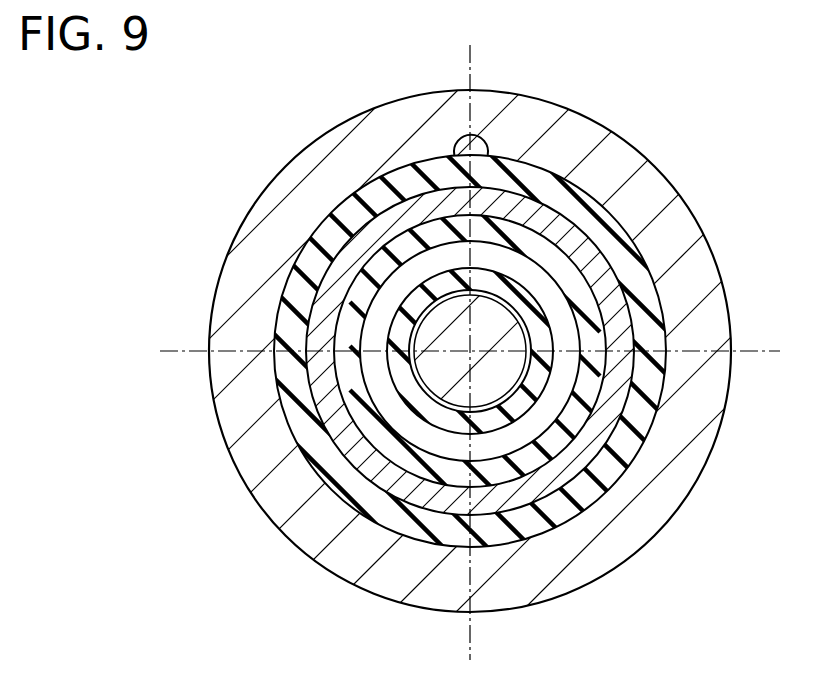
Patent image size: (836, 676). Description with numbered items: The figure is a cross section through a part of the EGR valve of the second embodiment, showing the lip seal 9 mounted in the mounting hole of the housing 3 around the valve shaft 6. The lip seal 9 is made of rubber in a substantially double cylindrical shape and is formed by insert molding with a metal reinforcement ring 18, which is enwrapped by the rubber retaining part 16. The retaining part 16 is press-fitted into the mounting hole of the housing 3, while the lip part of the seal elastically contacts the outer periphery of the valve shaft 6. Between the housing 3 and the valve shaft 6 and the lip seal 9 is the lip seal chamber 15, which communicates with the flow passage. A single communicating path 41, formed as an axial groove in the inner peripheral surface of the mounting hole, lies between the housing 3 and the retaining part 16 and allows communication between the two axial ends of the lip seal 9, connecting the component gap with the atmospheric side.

The housing 3 is at (316, 168).
The lip seal 9 is at (300, 253).
The retaining part 16 is at (638, 253).
The reinforcement ring 18 is at (330, 413).
The lip seal chamber 15 is at (405, 423).
The valve shaft 6 is at (487, 373).
The communicating path 41 is at (485, 141).